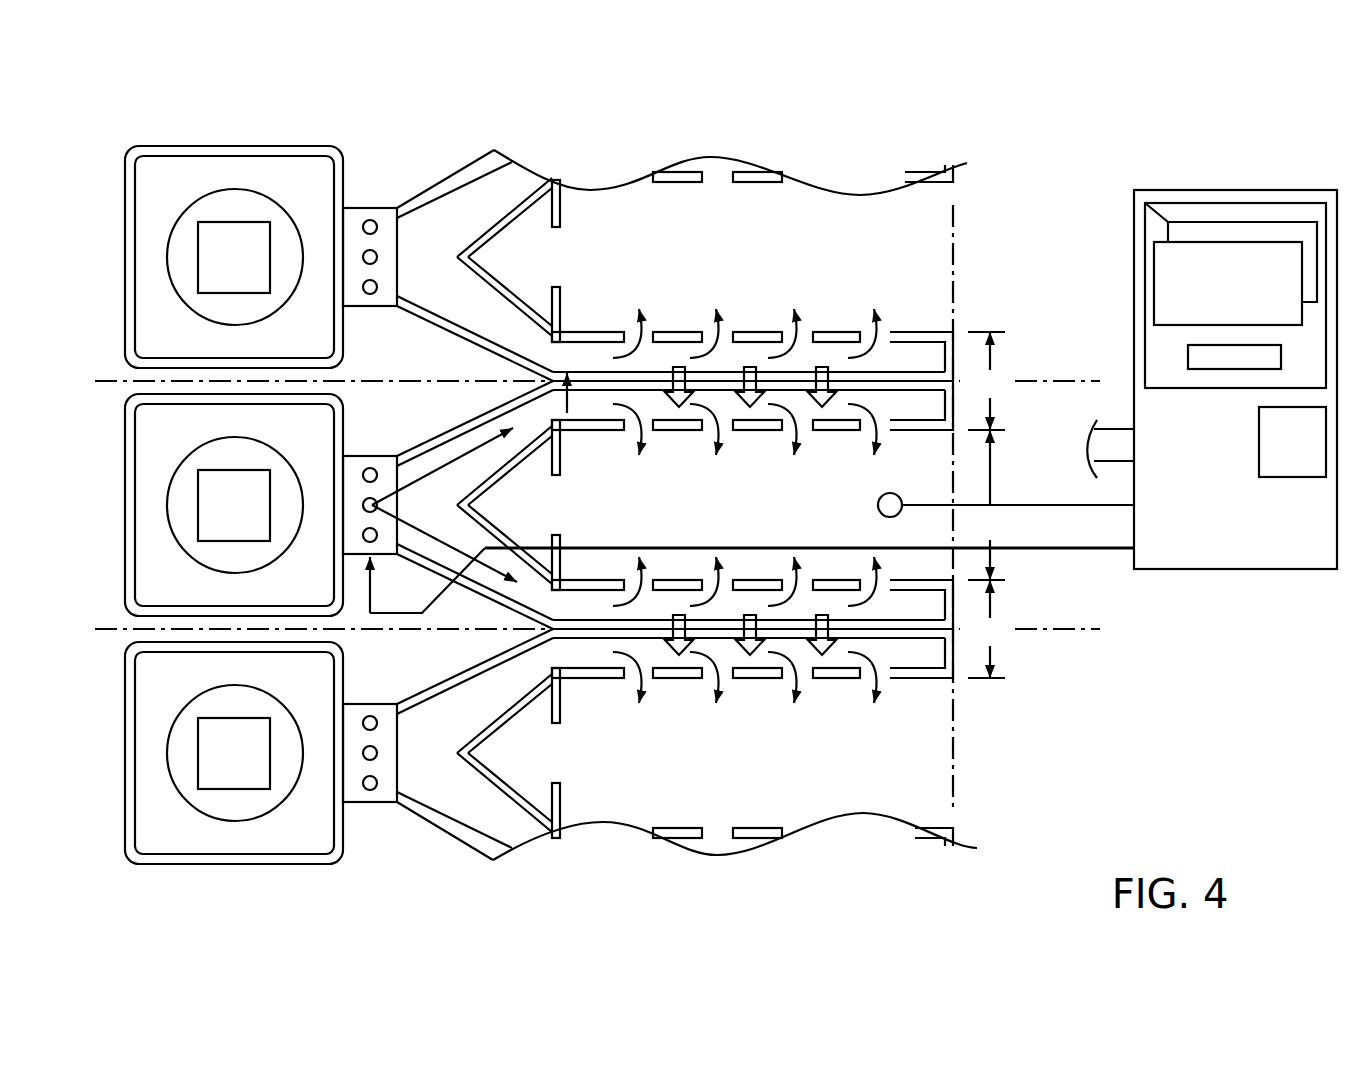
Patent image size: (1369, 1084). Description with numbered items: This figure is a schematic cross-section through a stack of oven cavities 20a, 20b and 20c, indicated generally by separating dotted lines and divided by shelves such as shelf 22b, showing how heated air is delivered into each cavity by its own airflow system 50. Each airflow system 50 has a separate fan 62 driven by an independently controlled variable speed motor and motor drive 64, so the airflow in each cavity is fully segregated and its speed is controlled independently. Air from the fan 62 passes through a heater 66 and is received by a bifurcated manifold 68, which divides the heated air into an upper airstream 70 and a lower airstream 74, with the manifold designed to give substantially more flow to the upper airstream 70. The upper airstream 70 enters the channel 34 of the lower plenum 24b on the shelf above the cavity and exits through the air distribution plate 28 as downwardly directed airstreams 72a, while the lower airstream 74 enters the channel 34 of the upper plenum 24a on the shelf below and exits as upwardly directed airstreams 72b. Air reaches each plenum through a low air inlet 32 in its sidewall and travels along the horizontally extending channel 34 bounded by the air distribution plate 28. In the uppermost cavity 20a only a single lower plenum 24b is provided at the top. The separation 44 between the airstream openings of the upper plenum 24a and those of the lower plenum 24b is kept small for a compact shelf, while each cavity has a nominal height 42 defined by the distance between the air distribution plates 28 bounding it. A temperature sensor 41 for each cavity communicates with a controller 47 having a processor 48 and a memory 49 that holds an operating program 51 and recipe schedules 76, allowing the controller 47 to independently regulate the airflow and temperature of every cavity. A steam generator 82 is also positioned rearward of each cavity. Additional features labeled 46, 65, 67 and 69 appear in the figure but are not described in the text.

The uppermost cavity 20a is at (800, 256).
The cavity 20b is at (745, 501).
The cavity 20c is at (737, 774).
The shelf 22b is at (1090, 706).
The upper plenum 24a is at (955, 348).
The lower plenum 24b is at (918, 432).
The air distribution plate 28 is at (922, 331).
The air inlet 32 is at (571, 359).
The channel 34 is at (668, 358).
The temperature sensor 41 is at (879, 503).
The nominal height 42 is at (752, 521).
The separation 44 is at (779, 505).
The cross-flow passages 46 is at (751, 368).
The controller 47 is at (1300, 190).
The processor 48 is at (1259, 440).
The memory 49 is at (1237, 203).
The airflow system 50 is at (375, 145).
The operating program 51 is at (1188, 356).
The fan 62 is at (283, 217).
The variable speed motor and motor drive 64 is at (220, 270).
The nozzle wall 65 is at (428, 178).
The heater 66 is at (372, 308).
The flow channel 67 is at (468, 338).
The bifurcated manifold 68 is at (518, 224).
The baffle plate 69 is at (565, 336).
The upper airstream 70 is at (468, 457).
The downwardly directed airstreams 72a is at (640, 430).
The upwardly directed airstreams 72b is at (653, 582).
The lower airstream 74 is at (492, 568).
The recipe schedules 76 is at (1166, 224).
The steam generator 82 is at (646, 221).